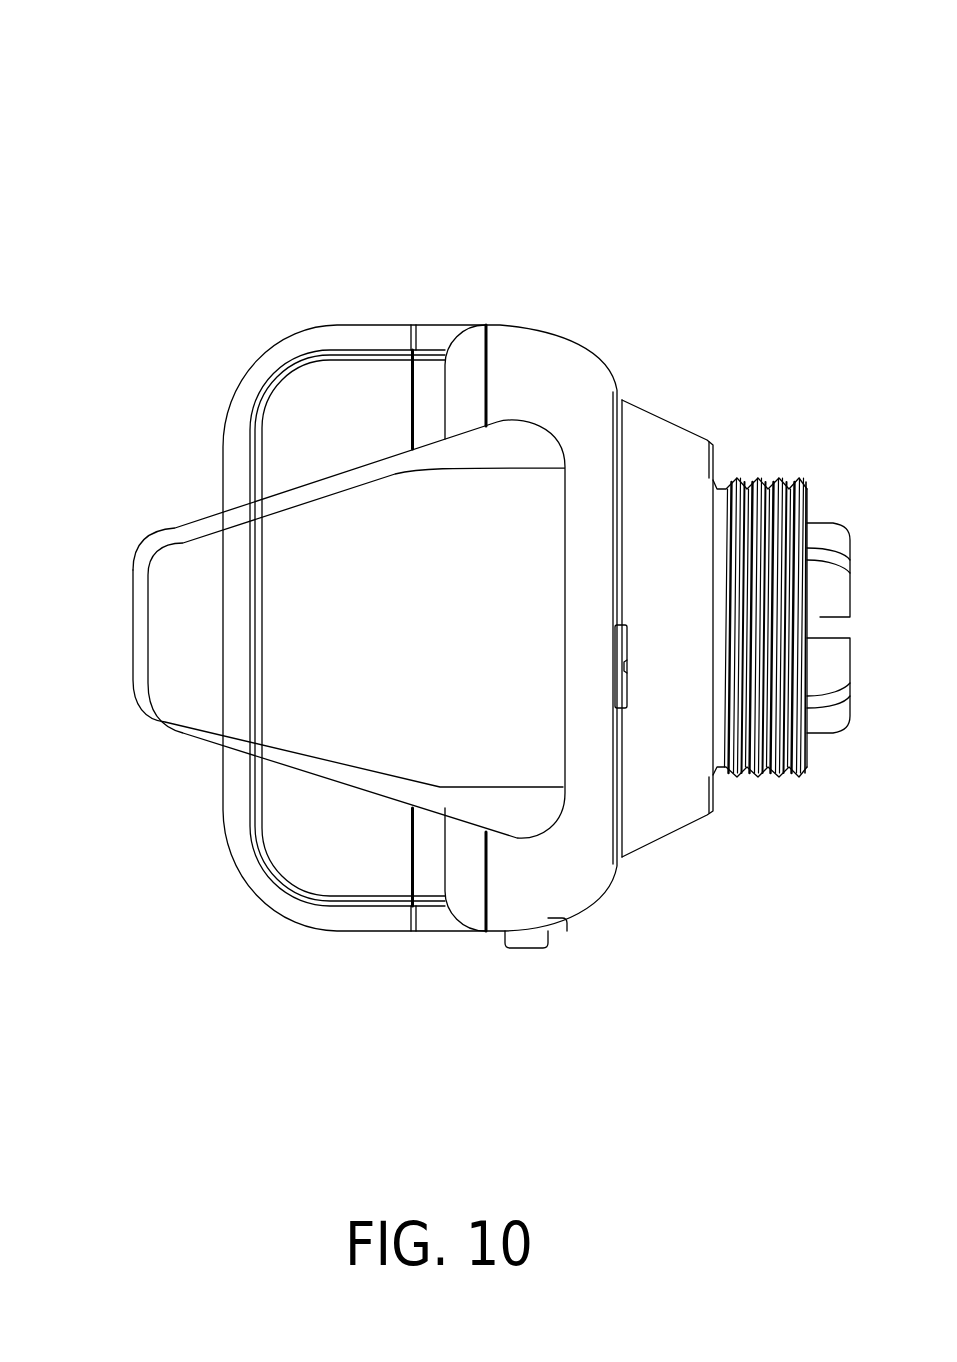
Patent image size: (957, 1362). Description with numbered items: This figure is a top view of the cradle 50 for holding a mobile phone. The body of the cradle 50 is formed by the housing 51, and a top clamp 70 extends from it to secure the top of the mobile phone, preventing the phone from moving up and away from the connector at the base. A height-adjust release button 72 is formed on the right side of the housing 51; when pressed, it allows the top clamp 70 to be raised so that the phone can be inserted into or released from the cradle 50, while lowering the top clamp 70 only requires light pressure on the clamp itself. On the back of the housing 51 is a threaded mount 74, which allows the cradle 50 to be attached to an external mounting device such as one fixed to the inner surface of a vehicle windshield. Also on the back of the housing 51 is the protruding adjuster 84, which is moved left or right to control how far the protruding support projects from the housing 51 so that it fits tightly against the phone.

The cradle 50 is at (718, 120).
The housing 51 is at (348, 345).
The top clamp 70 is at (180, 650).
The height-adjust release button 72 is at (532, 948).
The threaded mount 74 is at (785, 480).
The protruding adjuster 84 is at (622, 682).